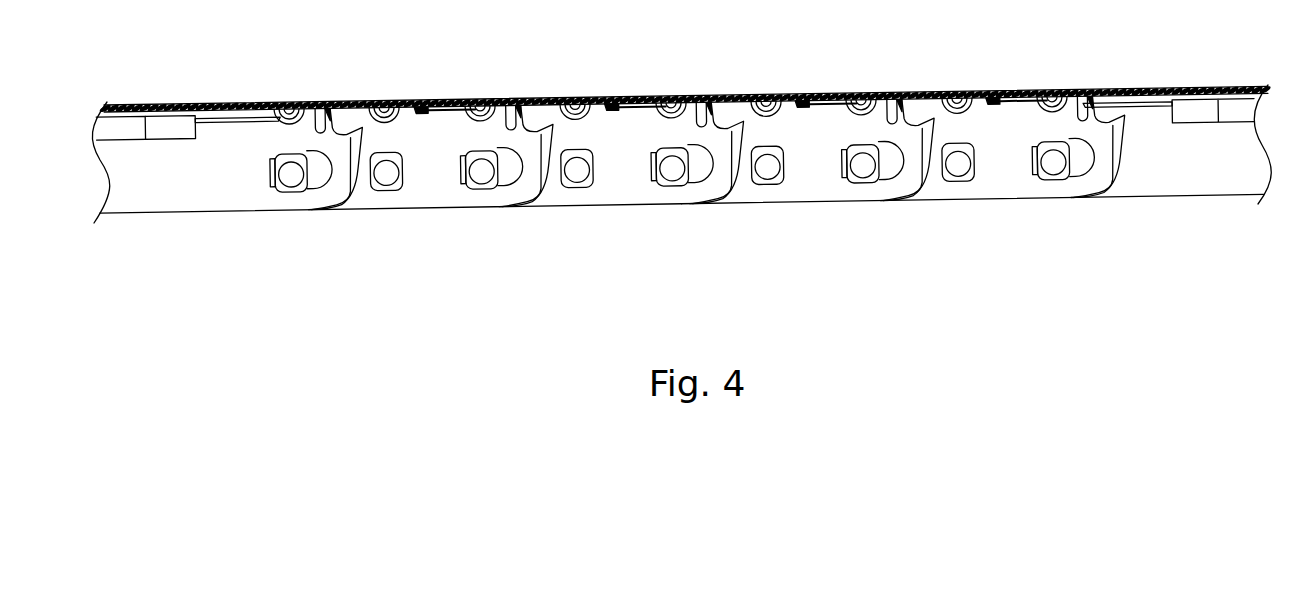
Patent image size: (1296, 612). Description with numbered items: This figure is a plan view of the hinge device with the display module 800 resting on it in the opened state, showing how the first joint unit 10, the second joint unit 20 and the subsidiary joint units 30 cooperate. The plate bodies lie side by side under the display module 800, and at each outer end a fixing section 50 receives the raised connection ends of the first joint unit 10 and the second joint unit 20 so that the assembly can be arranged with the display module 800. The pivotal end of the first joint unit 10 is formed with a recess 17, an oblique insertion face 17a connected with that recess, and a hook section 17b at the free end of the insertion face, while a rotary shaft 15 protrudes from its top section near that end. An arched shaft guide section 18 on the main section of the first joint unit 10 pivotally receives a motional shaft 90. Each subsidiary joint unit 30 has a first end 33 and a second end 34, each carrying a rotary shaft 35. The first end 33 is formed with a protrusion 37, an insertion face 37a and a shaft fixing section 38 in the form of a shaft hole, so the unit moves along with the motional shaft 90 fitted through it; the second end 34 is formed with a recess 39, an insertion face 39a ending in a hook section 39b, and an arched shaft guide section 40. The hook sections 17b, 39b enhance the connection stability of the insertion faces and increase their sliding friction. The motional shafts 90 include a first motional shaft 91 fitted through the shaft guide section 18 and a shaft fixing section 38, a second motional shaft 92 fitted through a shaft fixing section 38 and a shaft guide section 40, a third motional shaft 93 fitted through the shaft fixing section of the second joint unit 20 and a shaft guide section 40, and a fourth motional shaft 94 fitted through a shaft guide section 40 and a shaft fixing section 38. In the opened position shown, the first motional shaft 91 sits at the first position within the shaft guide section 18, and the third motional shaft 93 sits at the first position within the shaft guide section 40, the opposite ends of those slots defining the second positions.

The first joint unit 10 is at (137, 218).
The second joint unit 20 is at (1232, 206).
The fixing section 50 is at (120, 128).
The display module 800 is at (1045, 97).
The rotary shaft 15 is at (290, 117).
The recess 17 is at (320, 117).
The insertion face 17a is at (350, 169).
The hook section 17b is at (353, 141).
The shaft guide section 18 is at (272, 173).
The subsidiary joint unit 30 is at (622, 212).
The first end 33 is at (737, 207).
The second end 34 is at (903, 207).
The rotary shaft 35 is at (383, 117).
The protrusion 37 is at (910, 116).
The insertion face 37a is at (557, 149).
The shaft fixing section 38 is at (763, 129).
The recess 39 is at (492, 127).
The insertion face 39a is at (530, 181).
The hook section 39b is at (735, 136).
The shaft guide section 40 is at (502, 194).
The motional shaft 90 is at (571, 203).
The first motional shaft 91 is at (290, 179).
The second motional shaft 92 is at (385, 178).
The third motional shaft 93 is at (1052, 166).
The fourth motional shaft 94 is at (958, 168).